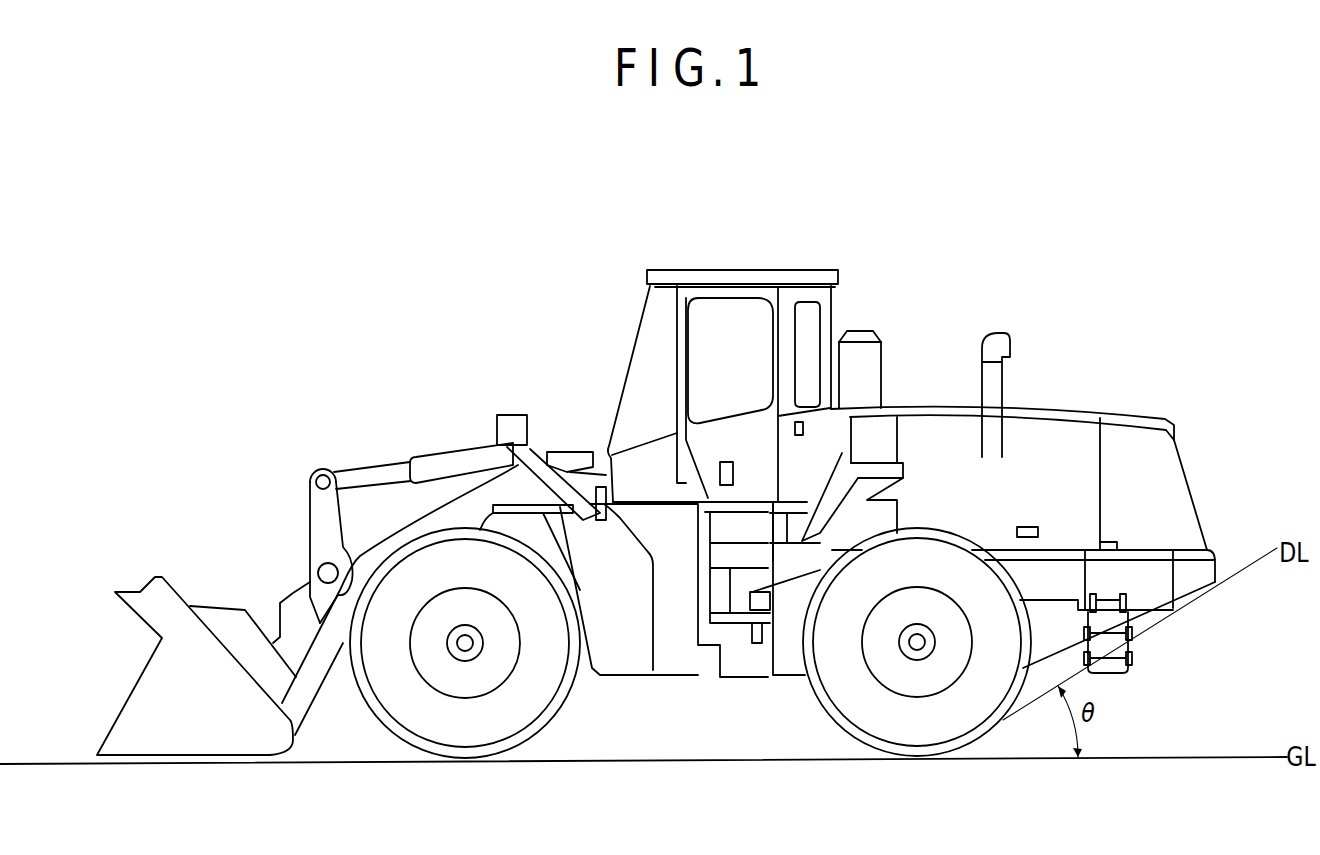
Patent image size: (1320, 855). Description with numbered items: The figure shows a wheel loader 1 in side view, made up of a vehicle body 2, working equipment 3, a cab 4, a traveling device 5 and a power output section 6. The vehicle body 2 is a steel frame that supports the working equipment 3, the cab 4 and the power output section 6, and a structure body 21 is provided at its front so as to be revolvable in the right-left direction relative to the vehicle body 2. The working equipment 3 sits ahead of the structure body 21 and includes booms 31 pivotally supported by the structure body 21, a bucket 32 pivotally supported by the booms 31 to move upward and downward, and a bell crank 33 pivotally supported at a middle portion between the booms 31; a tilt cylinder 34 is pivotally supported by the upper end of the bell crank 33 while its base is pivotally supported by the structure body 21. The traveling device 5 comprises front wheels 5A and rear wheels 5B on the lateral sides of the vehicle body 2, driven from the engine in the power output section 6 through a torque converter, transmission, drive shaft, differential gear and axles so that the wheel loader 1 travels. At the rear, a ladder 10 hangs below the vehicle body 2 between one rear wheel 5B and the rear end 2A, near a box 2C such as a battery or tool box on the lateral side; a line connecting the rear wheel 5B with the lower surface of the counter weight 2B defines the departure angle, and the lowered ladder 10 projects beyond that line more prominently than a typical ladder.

The wheel loader 1 is at (841, 143).
The vehicle body 2 is at (1145, 686).
The rear end 2A is at (1200, 600).
The counter weight 2B is at (1218, 572).
The box 2C is at (1133, 565).
The working equipment 3 is at (491, 342).
The cab 4 is at (743, 270).
The traveling device 5 is at (1034, 748).
The front wheels 5A is at (470, 738).
The rear wheels 5B is at (923, 738).
The power output section 6 is at (1078, 376).
The ladder 10 is at (1132, 648).
The structure body 21 is at (627, 653).
The booms 31 is at (457, 510).
The bucket 32 is at (147, 577).
The bell crank 33 is at (310, 522).
The tilt cylinder 34 is at (457, 458).